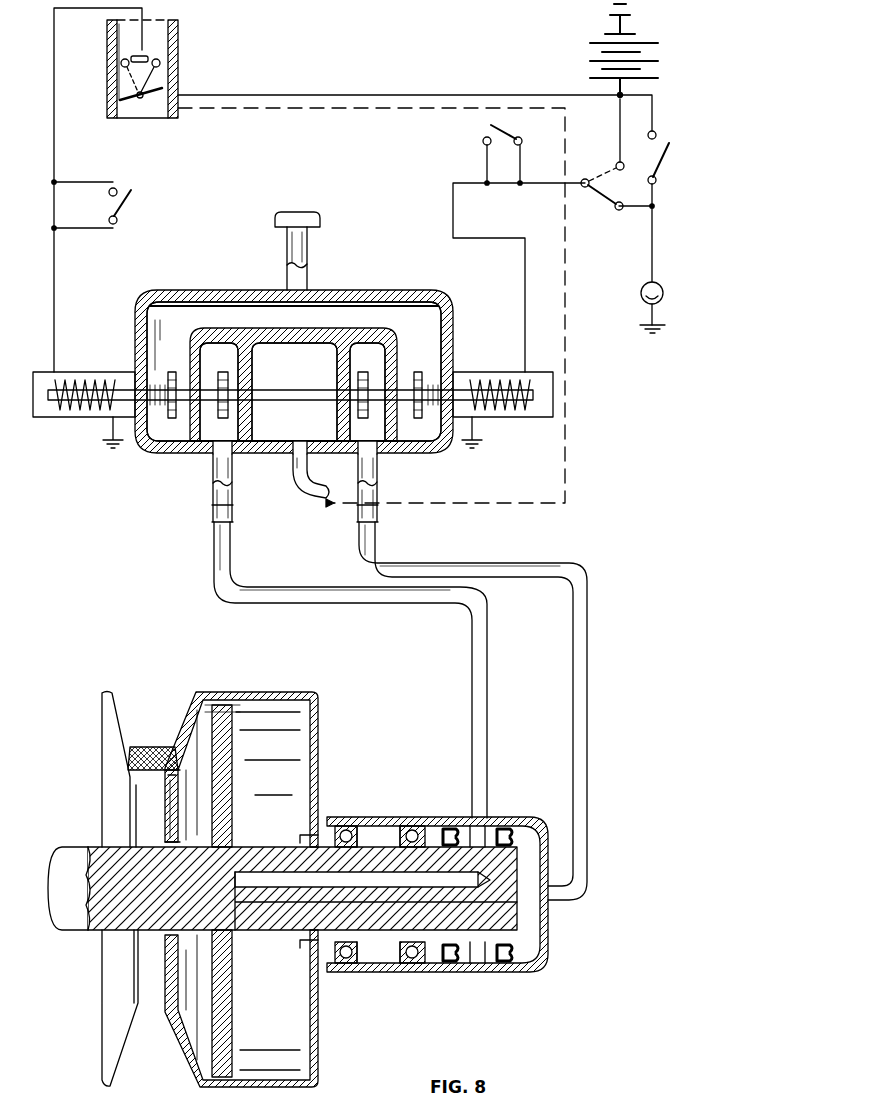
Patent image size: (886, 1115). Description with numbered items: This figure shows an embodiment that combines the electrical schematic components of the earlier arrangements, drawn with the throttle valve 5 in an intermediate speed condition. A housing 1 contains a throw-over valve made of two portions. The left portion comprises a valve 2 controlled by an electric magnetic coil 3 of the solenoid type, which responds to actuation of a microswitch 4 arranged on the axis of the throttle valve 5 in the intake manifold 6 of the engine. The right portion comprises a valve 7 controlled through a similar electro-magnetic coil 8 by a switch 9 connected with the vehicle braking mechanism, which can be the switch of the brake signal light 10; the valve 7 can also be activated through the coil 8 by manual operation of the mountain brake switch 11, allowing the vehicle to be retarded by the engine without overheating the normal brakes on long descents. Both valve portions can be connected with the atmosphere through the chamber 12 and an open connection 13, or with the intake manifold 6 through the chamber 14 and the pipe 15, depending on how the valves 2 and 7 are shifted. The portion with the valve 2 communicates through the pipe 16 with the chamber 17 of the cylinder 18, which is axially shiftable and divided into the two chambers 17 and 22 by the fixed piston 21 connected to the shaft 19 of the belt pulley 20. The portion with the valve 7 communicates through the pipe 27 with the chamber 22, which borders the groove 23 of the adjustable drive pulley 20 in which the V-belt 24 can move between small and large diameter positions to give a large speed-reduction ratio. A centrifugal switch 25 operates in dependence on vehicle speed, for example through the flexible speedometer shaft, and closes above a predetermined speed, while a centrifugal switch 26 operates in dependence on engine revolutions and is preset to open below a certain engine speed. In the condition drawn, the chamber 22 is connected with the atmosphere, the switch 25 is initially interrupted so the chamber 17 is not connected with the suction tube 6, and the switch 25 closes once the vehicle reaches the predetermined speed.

The housing 1 is at (387, 290).
The valve 2 is at (198, 360).
The electric magnetic coil 3 is at (86, 420).
The microswitch 4 is at (122, 59).
The throttle valve 5 is at (140, 100).
The intake manifold 6 is at (178, 33).
The valve 7 is at (356, 374).
The electro-magnetic coil 8 is at (529, 420).
The switch 9 is at (664, 152).
The brake signal light 10 is at (643, 290).
The mountain brake switch 11 is at (600, 199).
The chamber 12 is at (239, 312).
The open connection 13 is at (290, 243).
The chamber 14 is at (304, 424).
The pipe 15 is at (262, 114).
The pipe 16 is at (220, 601).
The chamber 17 is at (283, 823).
The cylinder 18 is at (288, 692).
The shaft 19 is at (80, 846).
The belt pulley 20 is at (111, 693).
The fixed piston 21 is at (223, 733).
The chamber 22 is at (197, 825).
The groove 23 is at (158, 720).
The V-belt 24 is at (128, 756).
The centrifugal switch 25 is at (127, 207).
The centrifugal switch 26 is at (516, 123).
The pipe 27 is at (570, 605).